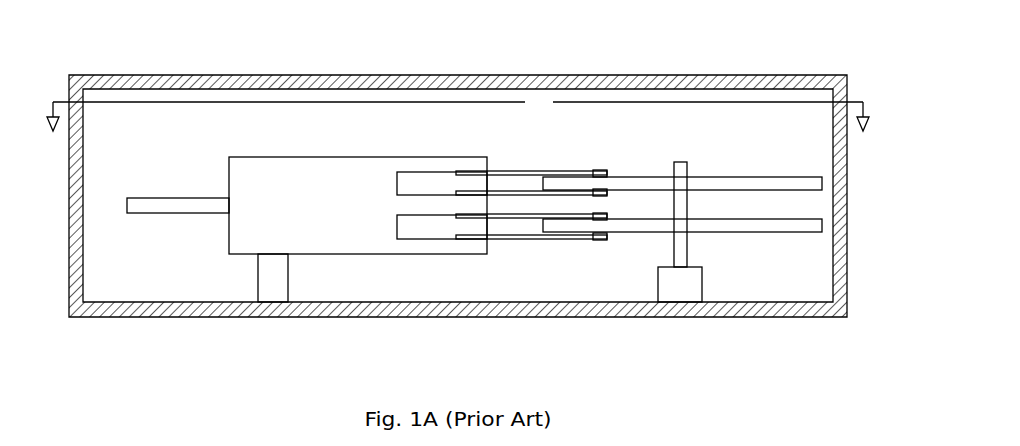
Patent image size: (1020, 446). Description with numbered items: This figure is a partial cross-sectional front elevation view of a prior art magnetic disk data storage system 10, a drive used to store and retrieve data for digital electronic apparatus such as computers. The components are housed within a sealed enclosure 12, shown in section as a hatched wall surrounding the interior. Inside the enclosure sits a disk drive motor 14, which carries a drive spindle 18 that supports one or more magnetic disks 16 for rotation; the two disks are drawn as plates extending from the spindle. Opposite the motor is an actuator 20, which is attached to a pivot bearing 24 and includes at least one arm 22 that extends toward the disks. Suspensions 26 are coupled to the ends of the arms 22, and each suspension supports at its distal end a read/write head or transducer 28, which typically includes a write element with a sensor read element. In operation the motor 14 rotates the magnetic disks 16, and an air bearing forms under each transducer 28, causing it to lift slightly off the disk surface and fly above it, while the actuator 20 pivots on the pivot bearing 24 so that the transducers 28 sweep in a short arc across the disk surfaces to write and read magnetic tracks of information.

The magnetic disk data storage system 10 is at (828, 50).
The sealed enclosure 12 is at (468, 311).
The disk drive motor 14 is at (683, 287).
The magnetic disks 16 is at (732, 176).
The drive spindle 18 is at (684, 245).
The actuator 20 is at (346, 142).
The arm 22 is at (448, 156).
The pivot bearing 24 is at (273, 290).
The suspensions 26 is at (570, 171).
The read/write head or transducer 28 is at (607, 173).